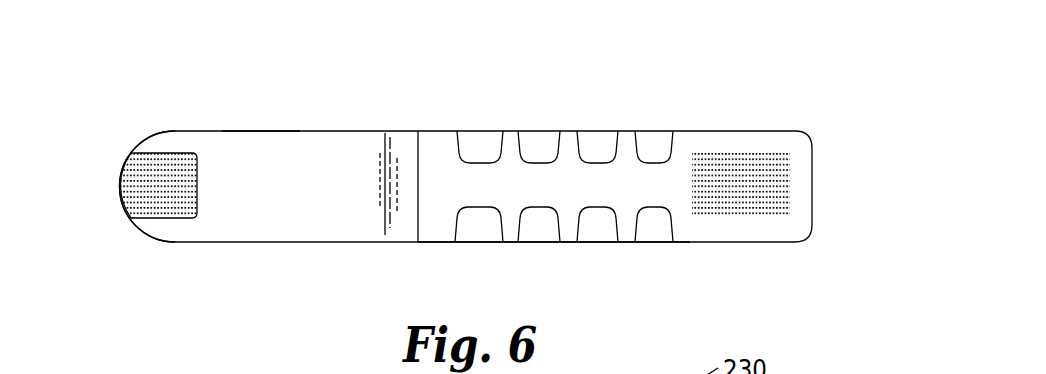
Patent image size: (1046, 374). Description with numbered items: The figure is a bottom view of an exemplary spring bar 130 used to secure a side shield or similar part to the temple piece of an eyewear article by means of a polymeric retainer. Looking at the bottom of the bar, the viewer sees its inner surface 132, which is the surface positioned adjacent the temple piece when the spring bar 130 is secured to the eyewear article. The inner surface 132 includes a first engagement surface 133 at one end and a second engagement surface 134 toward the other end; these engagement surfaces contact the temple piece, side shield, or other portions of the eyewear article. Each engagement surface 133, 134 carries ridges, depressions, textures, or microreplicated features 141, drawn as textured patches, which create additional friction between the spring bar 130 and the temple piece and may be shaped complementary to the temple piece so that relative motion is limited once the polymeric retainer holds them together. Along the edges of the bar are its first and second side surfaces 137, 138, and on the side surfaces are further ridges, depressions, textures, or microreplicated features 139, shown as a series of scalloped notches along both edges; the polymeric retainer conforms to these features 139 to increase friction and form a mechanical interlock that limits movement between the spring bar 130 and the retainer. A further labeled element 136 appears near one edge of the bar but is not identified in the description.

The spring bar 130 is at (748, 72).
The inner surface 132 is at (435, 228).
The first engagement surface 133 is at (128, 182).
The second engagement surface 134 is at (567, 225).
The top surface 136 is at (223, 130).
The first side surface 137 is at (440, 130).
The second side surface 138 is at (405, 243).
The microreplicated features 139 is at (592, 138).
The microreplicated features 141 is at (162, 168).